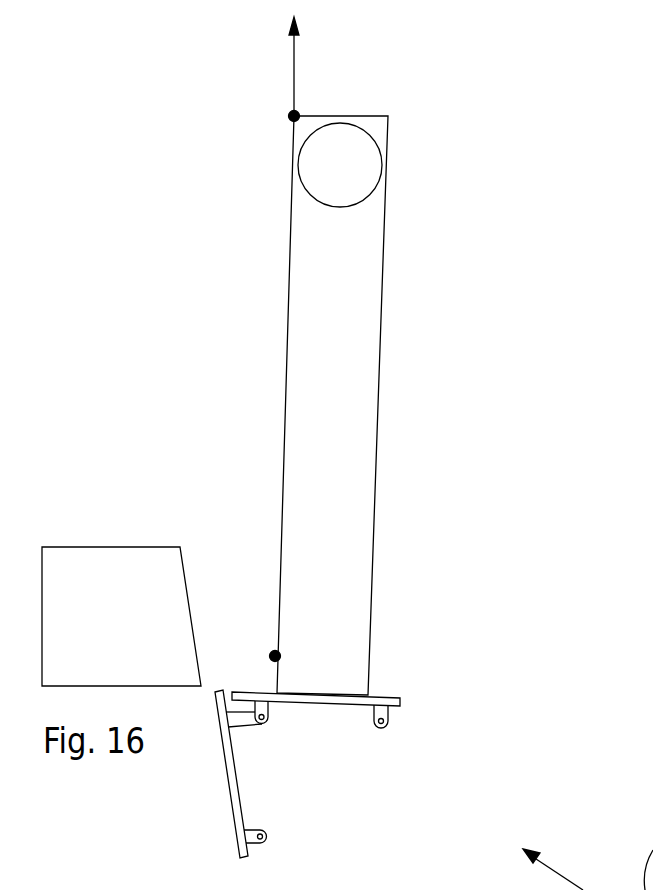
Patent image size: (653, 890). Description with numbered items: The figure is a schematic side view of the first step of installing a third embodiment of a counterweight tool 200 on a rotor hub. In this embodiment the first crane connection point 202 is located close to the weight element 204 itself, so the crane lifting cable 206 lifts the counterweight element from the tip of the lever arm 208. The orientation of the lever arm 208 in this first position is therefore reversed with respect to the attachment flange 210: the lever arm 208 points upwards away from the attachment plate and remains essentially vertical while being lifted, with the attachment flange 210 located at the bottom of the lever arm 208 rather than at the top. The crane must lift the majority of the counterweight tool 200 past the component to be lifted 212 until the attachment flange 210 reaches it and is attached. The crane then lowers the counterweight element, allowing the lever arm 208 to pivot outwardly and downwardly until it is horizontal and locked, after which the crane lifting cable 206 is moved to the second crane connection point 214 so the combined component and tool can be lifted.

The counterweight tool 200 is at (455, 430).
The first crane connection point 202 is at (288, 116).
The weight element 204 is at (370, 167).
The crane lifting cable 206 is at (295, 73).
The lever arm 208 is at (312, 302).
The attachment flange 210 is at (230, 788).
The component to be lifted 212 is at (108, 562).
The second crane connection point 214 is at (272, 651).